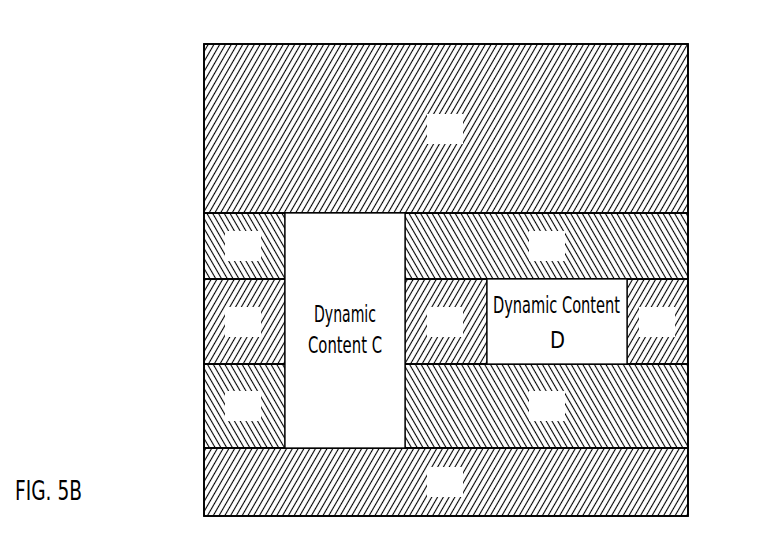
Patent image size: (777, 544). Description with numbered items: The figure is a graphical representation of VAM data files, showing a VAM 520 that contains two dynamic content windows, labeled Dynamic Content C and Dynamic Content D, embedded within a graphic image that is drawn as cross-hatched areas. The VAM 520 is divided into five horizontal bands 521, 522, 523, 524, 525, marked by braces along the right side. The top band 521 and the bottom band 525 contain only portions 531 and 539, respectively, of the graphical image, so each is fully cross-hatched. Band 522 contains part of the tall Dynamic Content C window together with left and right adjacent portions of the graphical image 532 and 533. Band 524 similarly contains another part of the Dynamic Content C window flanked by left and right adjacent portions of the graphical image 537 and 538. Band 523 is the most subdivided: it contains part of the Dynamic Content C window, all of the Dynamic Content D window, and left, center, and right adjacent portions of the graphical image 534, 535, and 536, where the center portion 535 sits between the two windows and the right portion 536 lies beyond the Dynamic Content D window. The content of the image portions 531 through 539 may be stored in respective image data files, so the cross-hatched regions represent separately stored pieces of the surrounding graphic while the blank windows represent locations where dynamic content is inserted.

The VAM 520 is at (145, 50).
The horizontal band 521 is at (707, 44).
The horizontal band 522 is at (707, 213).
The horizontal band 523 is at (707, 279).
The horizontal band 524 is at (707, 364).
The horizontal band 525 is at (707, 448).
The portion of the graphical image 531 is at (446, 128).
The left adjacent portion of the graphical image 532 is at (244, 246).
The right adjacent portion of the graphical image 533 is at (546, 246).
The left adjacent portion of the graphical image 534 is at (244, 321).
The center adjacent portion of the graphical image 535 is at (446, 321).
The right adjacent portion of the graphical image 536 is at (657, 321).
The left adjacent portion of the graphical image 537 is at (244, 406).
The right adjacent portion of the graphical image 538 is at (546, 406).
The portion of the graphical image 539 is at (446, 482).